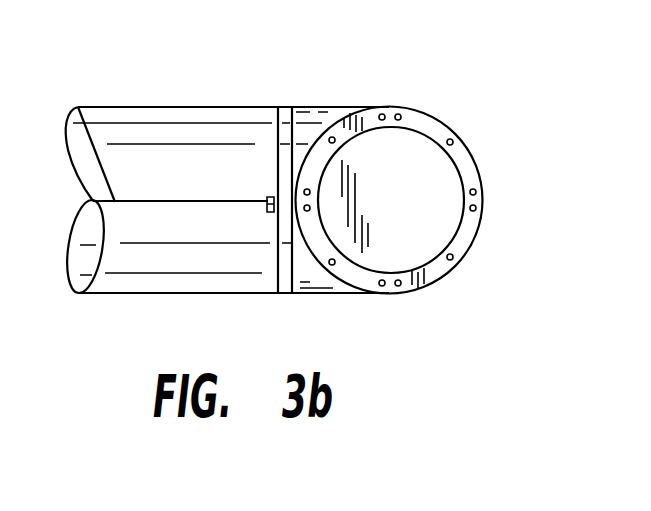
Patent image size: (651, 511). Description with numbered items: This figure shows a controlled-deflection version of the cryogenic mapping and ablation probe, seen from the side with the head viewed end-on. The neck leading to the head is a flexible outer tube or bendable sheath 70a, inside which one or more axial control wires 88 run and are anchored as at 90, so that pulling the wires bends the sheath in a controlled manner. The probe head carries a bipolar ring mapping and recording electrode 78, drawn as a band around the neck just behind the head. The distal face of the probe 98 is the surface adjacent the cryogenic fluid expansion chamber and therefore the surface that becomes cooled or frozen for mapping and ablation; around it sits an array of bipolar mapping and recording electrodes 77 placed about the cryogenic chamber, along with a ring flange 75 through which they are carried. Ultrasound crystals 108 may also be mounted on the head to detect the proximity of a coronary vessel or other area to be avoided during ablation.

The bendable sheath or outer tube 70a is at (215, 112).
The axial control wires 88 is at (78, 107).
The bipolar ring mapping and recording electrode 78 is at (287, 112).
The anchor for control wires 90 is at (267, 198).
The ring flange 75 is at (448, 228).
The mapping and recording electrodes around cryogenic chamber 77 is at (473, 208).
The ultrasound crystals 108 is at (333, 139).
The face of the probe 98 is at (443, 197).